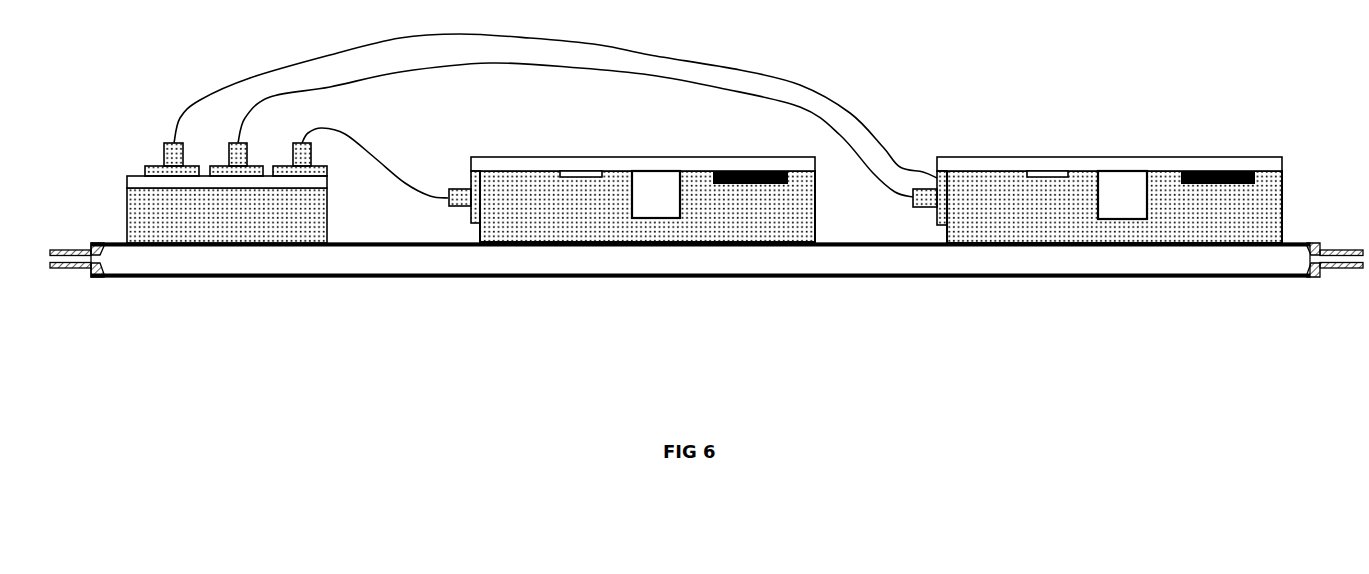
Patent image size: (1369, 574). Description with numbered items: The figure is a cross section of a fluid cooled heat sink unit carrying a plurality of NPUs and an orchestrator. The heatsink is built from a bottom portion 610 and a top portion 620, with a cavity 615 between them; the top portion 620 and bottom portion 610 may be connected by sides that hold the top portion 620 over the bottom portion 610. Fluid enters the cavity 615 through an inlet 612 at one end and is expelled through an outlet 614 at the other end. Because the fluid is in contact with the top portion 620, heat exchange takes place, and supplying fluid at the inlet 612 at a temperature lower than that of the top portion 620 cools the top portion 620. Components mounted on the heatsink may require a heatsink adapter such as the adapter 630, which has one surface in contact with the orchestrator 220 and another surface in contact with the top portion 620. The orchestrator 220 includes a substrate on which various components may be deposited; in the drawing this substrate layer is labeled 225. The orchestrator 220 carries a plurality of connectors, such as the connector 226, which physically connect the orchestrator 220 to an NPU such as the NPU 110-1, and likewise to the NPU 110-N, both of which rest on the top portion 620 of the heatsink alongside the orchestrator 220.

The orchestrator 220 is at (183, 205).
The module substrate 225 is at (183, 201).
The connector 226 is at (236, 106).
The heatsink adapter 630 is at (227, 280).
The NPU 110-N is at (632, 160).
The NPU 110-1 is at (1097, 160).
The bottom portion 610 is at (706, 306).
The cavity 615 is at (700, 300).
The top portion 620 is at (700, 288).
The outlet 614 is at (77, 298).
The inlet 612 is at (1335, 299).